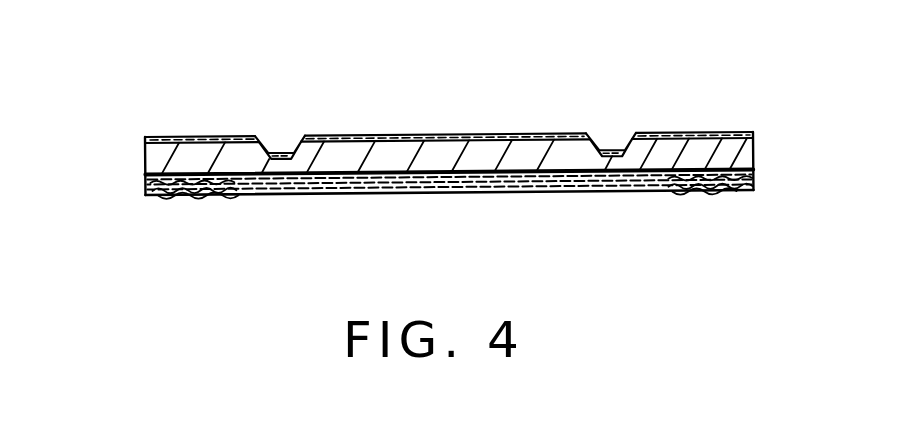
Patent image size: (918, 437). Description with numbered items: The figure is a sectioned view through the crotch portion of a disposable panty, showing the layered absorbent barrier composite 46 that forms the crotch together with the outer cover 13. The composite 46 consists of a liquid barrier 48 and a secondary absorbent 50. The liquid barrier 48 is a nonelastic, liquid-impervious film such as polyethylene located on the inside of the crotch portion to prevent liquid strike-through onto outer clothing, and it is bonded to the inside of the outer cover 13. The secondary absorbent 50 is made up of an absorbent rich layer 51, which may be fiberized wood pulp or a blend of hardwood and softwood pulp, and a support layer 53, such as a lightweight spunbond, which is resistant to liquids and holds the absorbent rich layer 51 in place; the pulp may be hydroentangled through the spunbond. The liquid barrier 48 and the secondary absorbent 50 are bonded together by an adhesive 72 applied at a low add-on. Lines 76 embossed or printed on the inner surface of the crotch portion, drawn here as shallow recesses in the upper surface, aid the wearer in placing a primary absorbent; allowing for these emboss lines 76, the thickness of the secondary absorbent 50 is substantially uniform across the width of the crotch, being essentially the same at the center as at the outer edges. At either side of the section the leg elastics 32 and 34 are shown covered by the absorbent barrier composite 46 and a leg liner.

The outer cover 13 is at (432, 197).
The leg elastic 32 is at (713, 197).
The leg elastic 34 is at (228, 198).
The absorbent barrier composite 46 is at (122, 147).
The liquid barrier 48 is at (757, 172).
The secondary absorbent 50 is at (651, 118).
The absorbent rich layer 51 is at (384, 156).
The support layer 53 is at (506, 134).
The adhesive 72 is at (683, 168).
The emboss line 76 is at (284, 118).